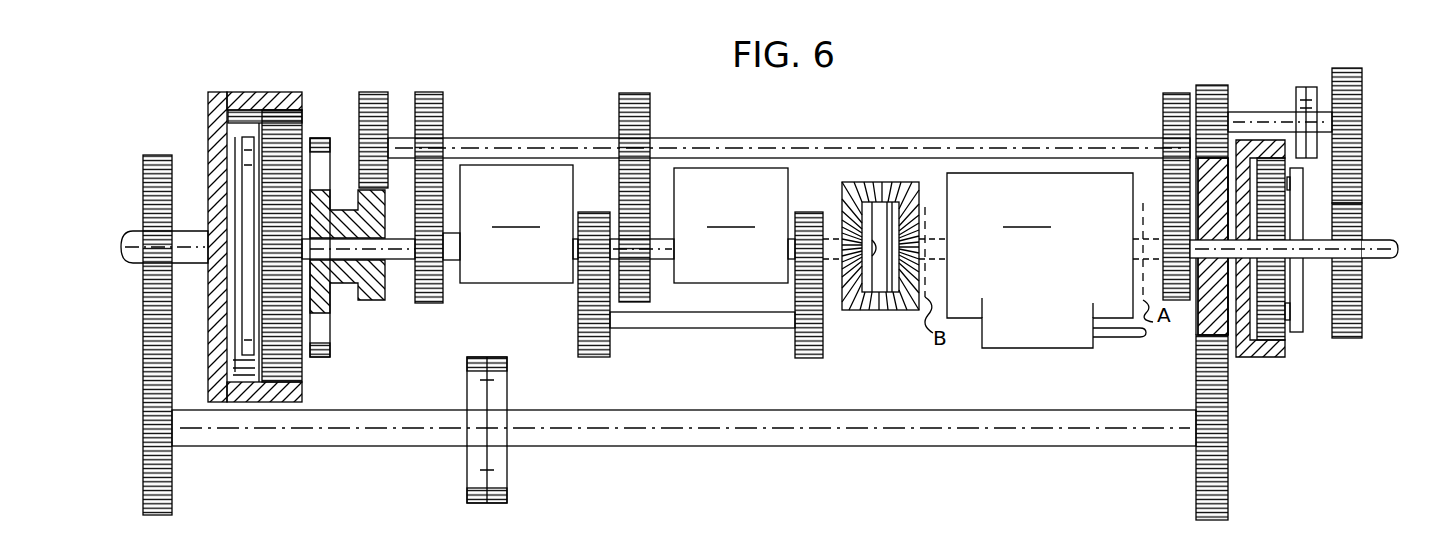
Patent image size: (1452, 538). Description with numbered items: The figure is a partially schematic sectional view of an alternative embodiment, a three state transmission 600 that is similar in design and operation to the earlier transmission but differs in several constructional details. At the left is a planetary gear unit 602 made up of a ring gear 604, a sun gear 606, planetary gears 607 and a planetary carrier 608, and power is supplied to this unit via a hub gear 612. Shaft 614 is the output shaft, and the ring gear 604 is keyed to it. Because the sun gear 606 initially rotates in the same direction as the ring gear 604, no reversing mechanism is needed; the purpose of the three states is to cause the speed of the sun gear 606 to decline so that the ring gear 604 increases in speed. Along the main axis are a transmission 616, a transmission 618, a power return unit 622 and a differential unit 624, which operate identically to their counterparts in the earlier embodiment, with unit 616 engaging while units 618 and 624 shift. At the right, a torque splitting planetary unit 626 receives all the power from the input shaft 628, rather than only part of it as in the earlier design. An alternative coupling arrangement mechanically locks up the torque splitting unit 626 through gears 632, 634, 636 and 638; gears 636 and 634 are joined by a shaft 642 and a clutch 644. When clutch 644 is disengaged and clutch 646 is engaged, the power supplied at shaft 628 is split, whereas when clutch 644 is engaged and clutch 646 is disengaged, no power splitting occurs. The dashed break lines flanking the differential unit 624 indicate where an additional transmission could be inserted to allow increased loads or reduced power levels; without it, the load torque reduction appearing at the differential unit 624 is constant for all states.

The three state transmission 600 is at (1050, 137).
The planetary gear unit 602 is at (228, 93).
The ring gear 604 is at (287, 108).
The sun gear 606 is at (247, 208).
The planetary gears 607 is at (262, 137).
The planetary carrier 608 is at (243, 153).
The hub gear 612 is at (370, 301).
The output shaft 614 is at (131, 231).
The transmission 616 is at (516, 224).
The transmission 618 is at (731, 225).
The power return unit 622 is at (883, 183).
The differential unit 624 is at (1040, 260).
The torque splitting planetary unit 626 is at (1257, 359).
The input shaft 628 is at (1380, 260).
The gear 632 is at (1197, 323).
The gear 634 is at (1212, 84).
The gear 636 is at (1363, 112).
The gear 638 is at (1363, 205).
The shaft 642 is at (1256, 112).
The clutch 644 is at (1310, 87).
The clutch 646 is at (508, 464).